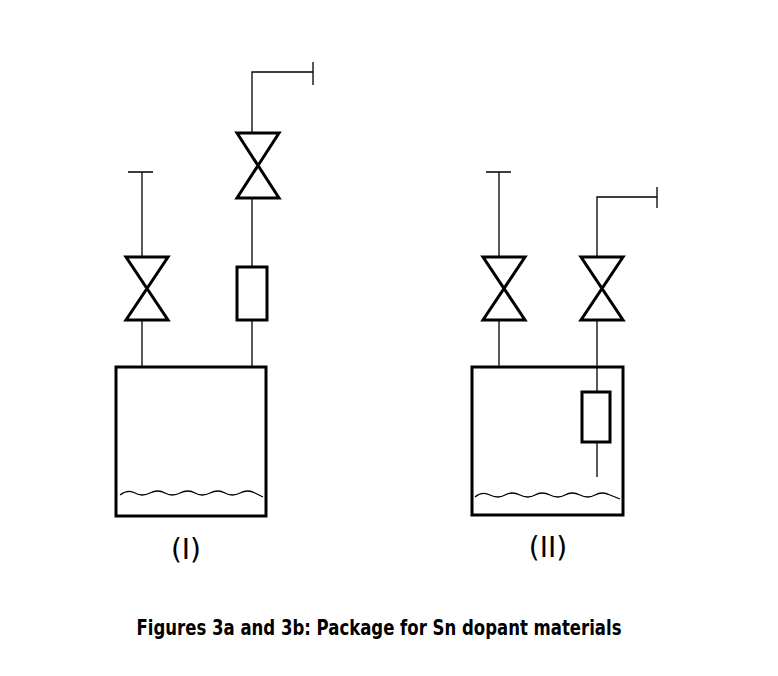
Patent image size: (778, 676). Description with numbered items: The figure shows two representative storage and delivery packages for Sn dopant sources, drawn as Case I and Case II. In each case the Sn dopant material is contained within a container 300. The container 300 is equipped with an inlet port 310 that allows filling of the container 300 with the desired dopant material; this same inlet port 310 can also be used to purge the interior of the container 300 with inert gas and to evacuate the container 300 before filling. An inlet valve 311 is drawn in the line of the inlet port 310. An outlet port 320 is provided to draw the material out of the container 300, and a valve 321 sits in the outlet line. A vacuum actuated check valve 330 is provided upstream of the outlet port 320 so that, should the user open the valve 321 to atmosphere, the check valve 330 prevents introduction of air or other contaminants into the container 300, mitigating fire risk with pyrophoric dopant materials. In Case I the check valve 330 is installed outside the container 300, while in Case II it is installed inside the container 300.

In FIG. 3A, the container 300 is at (268, 467).
In FIG. 3B, the container 300 is at (472, 478).
In FIG. 3A, the inlet port 310 is at (140, 212).
In FIG. 3B, the inlet port 310 is at (496, 200).
In FIG. 3A, the inlet valve 311 is at (140, 300).
In FIG. 3B, the inlet valve 311 is at (496, 300).
In FIG. 3A, the outlet port 320 is at (280, 72).
In FIG. 3B, the outlet port 320 is at (620, 197).
In FIG. 3A, the valve 321 is at (262, 170).
In FIG. 3B, the valve 321 is at (612, 264).
In FIG. 3A, the vacuum actuated check valve 330 is at (268, 285).
In FIG. 3B, the vacuum actuated check valve 330 is at (612, 405).